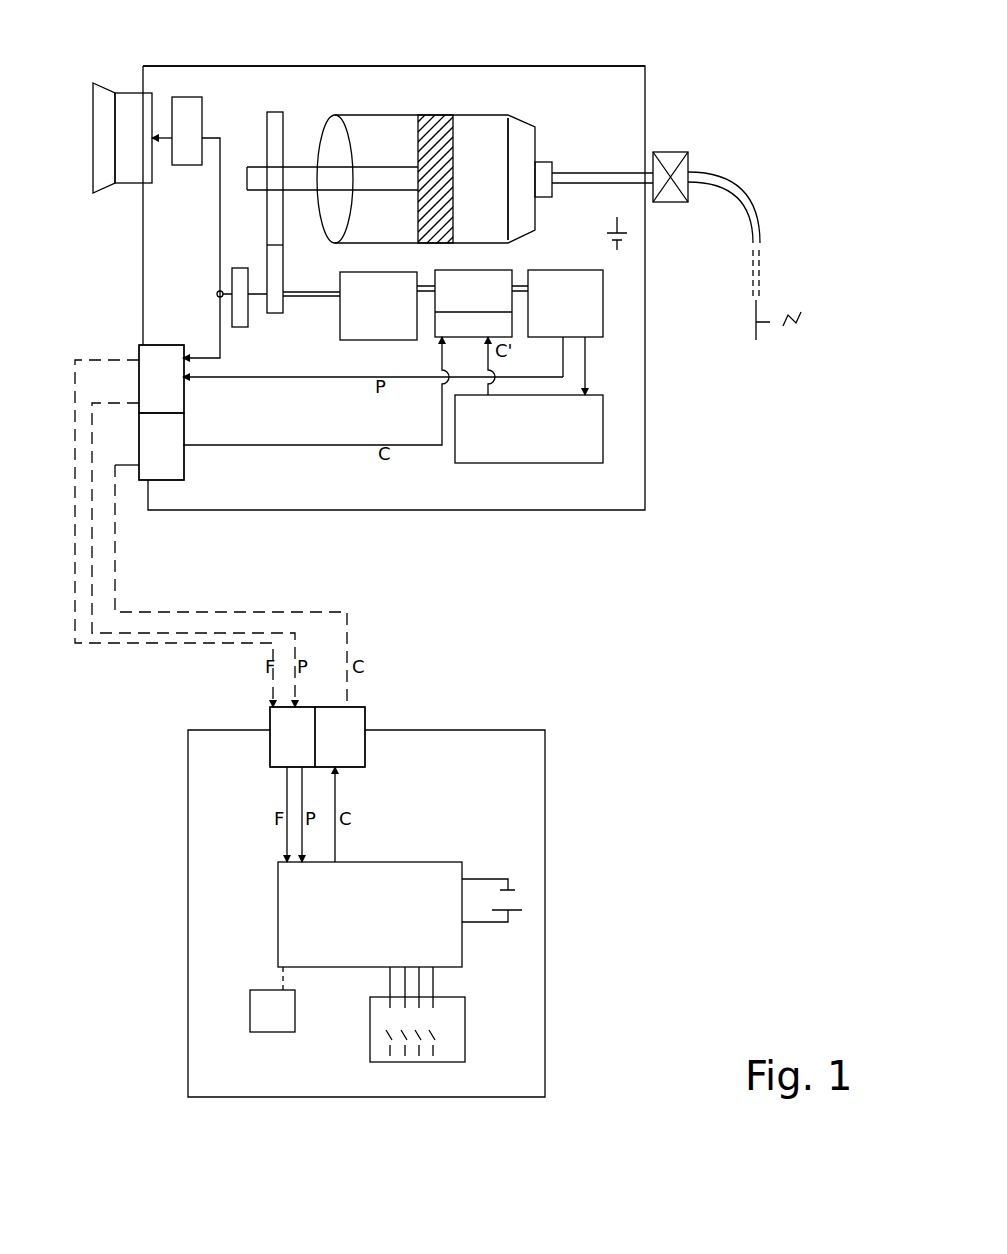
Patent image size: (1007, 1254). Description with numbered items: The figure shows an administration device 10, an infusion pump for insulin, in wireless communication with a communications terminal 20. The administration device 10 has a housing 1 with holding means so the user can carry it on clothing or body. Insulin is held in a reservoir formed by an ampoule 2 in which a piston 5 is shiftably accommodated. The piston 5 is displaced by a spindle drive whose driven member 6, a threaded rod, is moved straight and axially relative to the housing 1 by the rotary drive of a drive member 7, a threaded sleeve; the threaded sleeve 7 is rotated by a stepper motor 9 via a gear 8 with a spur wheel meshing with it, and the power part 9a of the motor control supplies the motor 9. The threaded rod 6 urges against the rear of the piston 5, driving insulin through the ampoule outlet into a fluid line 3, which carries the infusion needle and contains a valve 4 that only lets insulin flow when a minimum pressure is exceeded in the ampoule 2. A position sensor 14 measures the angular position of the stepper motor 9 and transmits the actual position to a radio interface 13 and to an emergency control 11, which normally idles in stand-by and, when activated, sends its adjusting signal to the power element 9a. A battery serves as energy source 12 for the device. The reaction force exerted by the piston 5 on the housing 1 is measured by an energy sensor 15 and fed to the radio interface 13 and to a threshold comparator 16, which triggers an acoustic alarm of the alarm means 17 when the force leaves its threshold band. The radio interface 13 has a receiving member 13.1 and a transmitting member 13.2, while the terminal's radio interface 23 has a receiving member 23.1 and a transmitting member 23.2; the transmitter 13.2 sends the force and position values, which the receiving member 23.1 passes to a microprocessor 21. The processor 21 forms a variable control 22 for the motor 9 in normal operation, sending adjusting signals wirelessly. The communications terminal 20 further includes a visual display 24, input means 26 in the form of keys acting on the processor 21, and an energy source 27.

The housing 1 is at (645, 66).
The ampoule 2 is at (487, 130).
The fluid line 3 is at (757, 282).
The valve 4 is at (676, 150).
The piston 5 is at (433, 110).
The driven member 6 is at (310, 180).
The drive member 7 is at (273, 137).
The gear 8 is at (390, 323).
The stepper motor 9 is at (494, 280).
The power part 9a is at (473, 324).
The administration device 10 is at (498, 500).
The emergency control 11 is at (590, 427).
The energy source 12 is at (622, 236).
The radio interface 13 is at (113, 370).
The receiving member 13.1 is at (161, 446).
The transmitting member 13.2 is at (161, 379).
The position sensor 14 is at (568, 303).
The energy sensor 15 is at (245, 305).
The threshold comparator 16 is at (187, 130).
The alarm means 17 is at (130, 125).
The communications terminal 20 is at (498, 740).
The microprocessor 21 is at (392, 891).
The variable control 22 is at (410, 930).
The radio interface 23 is at (372, 697).
The receiving member 23.1 is at (365, 705).
The transmitting member 23.2 is at (292, 737).
The visual display 24 is at (262, 987).
The input means 26 is at (463, 1028).
The energy source 27 is at (505, 876).